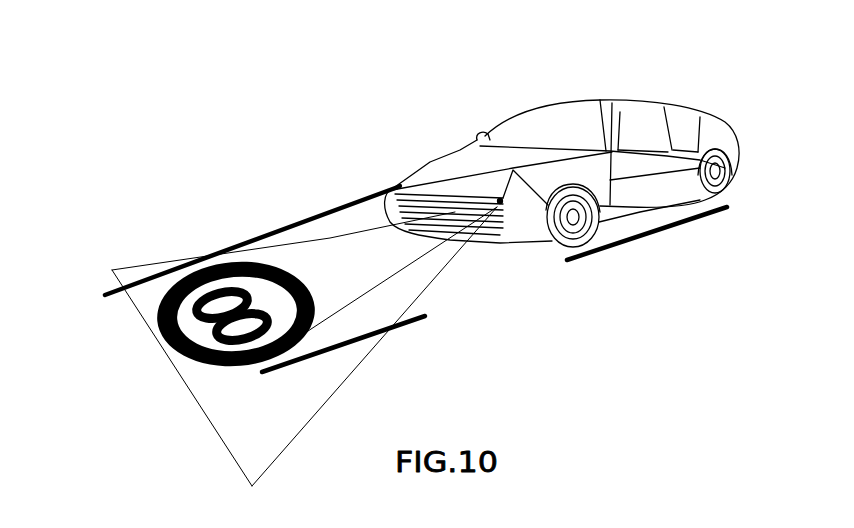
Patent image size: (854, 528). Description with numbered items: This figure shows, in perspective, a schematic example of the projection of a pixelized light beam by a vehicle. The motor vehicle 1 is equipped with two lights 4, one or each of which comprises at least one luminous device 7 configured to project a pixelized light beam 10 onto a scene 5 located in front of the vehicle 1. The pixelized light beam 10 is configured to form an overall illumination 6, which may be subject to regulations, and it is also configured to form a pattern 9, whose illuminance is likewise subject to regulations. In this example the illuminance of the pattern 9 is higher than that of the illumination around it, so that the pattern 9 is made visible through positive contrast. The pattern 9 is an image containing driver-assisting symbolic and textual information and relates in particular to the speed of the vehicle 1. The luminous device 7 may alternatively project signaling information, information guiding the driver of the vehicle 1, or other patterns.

The motor vehicle 1 is at (577, 100).
The light 4 is at (400, 185).
The scene 5 is at (141, 357).
The overall illumination 6 is at (295, 394).
The luminous device 7 is at (500, 201).
The pattern 9 is at (195, 283).
The pixelized light beam 10 is at (360, 242).